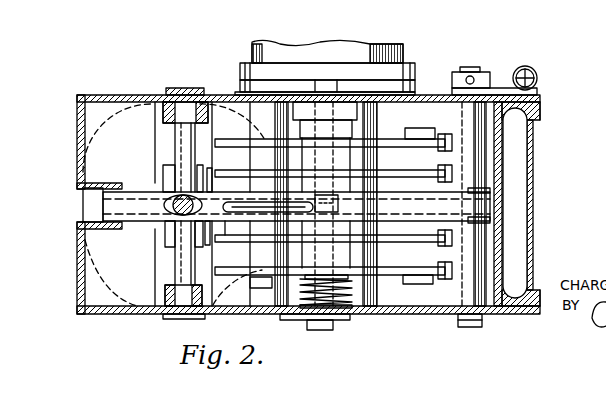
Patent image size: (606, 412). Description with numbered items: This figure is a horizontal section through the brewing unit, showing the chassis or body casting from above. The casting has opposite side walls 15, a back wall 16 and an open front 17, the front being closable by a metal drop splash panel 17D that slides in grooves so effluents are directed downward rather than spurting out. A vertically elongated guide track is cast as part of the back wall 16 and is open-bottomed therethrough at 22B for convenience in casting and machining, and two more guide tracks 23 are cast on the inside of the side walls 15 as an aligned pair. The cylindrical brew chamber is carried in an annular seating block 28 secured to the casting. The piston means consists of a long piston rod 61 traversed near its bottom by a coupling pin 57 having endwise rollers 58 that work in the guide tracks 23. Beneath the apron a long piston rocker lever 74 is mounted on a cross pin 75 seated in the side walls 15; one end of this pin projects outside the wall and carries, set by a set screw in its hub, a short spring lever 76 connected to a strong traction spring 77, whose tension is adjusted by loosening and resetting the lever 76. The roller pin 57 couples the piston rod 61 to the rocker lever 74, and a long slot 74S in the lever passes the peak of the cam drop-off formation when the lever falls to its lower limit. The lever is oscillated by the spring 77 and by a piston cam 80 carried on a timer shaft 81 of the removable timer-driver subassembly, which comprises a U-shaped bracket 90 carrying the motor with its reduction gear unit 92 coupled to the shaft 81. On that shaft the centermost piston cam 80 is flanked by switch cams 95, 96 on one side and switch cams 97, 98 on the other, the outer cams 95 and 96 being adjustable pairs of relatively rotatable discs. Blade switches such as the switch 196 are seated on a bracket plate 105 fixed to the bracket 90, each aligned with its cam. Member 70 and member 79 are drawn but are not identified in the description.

The back wall 16 is at (73, 121).
The side walls 15 is at (132, 96).
The open front 17 is at (516, 165).
The splash panel 17D is at (500, 245).
The annular seating block 28 is at (78, 290).
The frame member 70 is at (203, 135).
The open-bottomed portion of guide track 22B is at (92, 201).
The blade switch 196 is at (453, 229).
The piston rocker lever 74 is at (472, 218).
The coupling pin 57 is at (179, 140).
The endwise rollers 58 is at (180, 96).
The guide tracks 23 is at (191, 99).
The piston rod 61 is at (177, 213).
The piston cam 80 is at (259, 208).
The block 79 is at (342, 210).
The long slot 74S is at (277, 215).
The reduction gear unit 92 is at (335, 57).
The switch cam 98 is at (381, 140).
The switch cam 97 is at (388, 177).
The switch cam 96 is at (392, 237).
The switch cam 95 is at (392, 277).
The bracket plate 105 is at (423, 130).
The U-shaped bracket 90 is at (417, 301).
The timer shaft 81 is at (325, 329).
The cross pin 75 is at (472, 66).
The spring lever 76 is at (498, 87).
The traction spring 77 is at (537, 70).